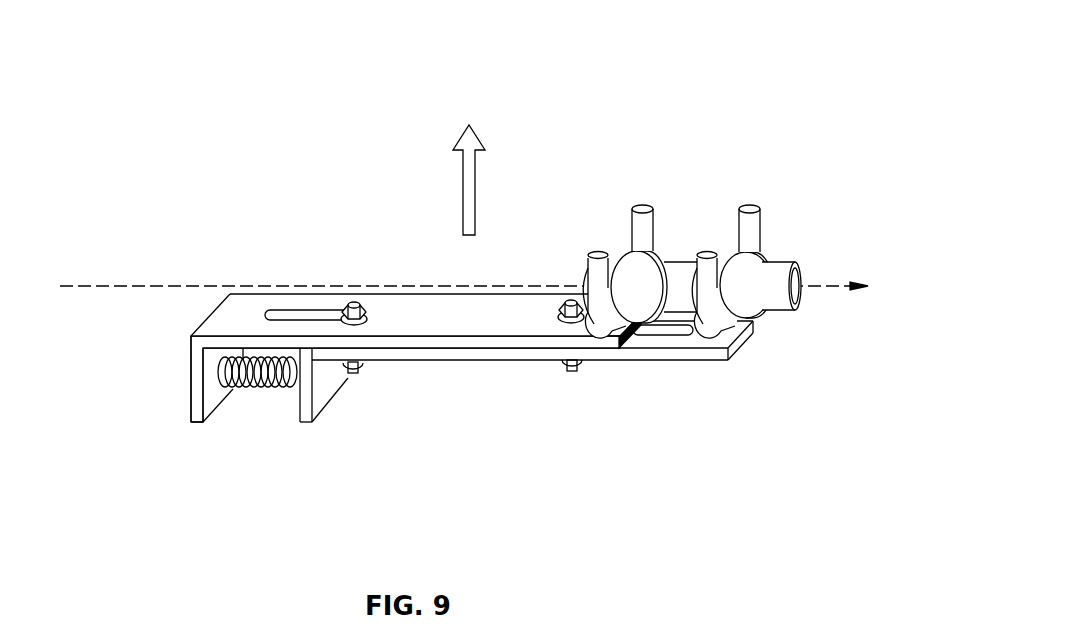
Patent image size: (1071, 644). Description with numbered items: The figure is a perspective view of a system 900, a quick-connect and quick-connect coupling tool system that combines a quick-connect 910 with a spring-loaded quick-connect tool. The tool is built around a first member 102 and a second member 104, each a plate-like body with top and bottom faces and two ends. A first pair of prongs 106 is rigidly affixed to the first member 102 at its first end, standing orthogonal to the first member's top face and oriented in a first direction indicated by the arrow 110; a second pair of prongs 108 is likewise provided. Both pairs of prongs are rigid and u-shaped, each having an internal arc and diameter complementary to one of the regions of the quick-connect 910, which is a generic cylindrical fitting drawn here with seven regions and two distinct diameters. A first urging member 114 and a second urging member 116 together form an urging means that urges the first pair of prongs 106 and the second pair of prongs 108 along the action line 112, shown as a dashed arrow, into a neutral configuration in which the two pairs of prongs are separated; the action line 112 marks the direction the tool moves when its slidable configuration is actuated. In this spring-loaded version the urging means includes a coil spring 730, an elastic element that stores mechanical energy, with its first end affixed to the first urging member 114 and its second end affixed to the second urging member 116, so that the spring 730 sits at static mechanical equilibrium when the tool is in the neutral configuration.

The system 900 is at (464, 231).
The first member 102 is at (433, 345).
The second member 104 is at (678, 355).
The first pair of prongs 106 is at (650, 225).
The second pair of prongs 108 is at (758, 213).
The arrow 110 is at (475, 193).
The action line 112 is at (118, 286).
The first urging member 114 is at (191, 395).
The second urging member 116 is at (327, 400).
The spring 730 is at (232, 387).
The quick-connect 910 is at (768, 270).